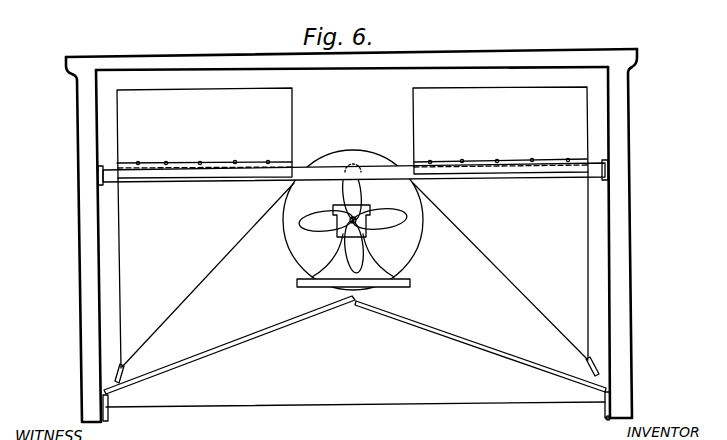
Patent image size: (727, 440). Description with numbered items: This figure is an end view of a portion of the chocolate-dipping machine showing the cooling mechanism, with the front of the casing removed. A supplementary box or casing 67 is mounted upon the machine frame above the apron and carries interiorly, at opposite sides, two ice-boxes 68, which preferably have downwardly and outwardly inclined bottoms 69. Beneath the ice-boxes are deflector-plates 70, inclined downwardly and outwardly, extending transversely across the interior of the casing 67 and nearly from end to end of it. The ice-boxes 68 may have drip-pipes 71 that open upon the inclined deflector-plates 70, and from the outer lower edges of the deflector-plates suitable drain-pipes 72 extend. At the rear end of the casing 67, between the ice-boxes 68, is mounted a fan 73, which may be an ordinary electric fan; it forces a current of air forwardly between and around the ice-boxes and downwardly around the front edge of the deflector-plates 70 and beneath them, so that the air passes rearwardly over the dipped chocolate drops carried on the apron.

The supplementary box or casing 67 is at (365, 235).
The ice-boxes 68 is at (352, 227).
The inclined bottoms 69 is at (202, 287).
The deflector-plates 70 is at (270, 331).
The drip-pipes 71 is at (115, 372).
The drain-pipes 72 is at (108, 413).
The fan 73 is at (353, 167).